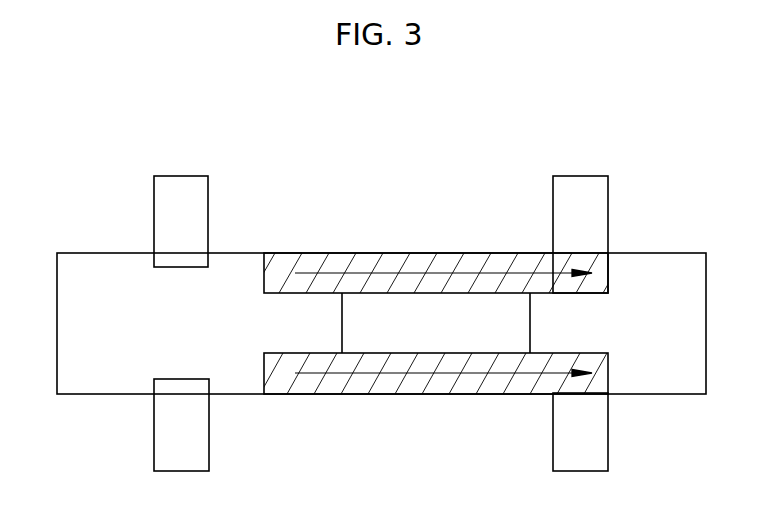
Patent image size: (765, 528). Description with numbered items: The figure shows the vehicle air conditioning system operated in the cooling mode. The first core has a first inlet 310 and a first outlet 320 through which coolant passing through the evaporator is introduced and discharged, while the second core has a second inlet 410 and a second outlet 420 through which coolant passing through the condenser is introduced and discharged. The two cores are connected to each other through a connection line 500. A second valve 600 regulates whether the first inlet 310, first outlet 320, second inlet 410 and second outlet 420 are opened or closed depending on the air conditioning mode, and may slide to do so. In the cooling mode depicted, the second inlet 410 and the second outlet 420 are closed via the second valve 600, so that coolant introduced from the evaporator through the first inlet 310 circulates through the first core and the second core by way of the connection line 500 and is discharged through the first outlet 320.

The first inlet 310 is at (162, 207).
The first outlet 320 is at (163, 438).
The second inlet 410 is at (602, 206).
The second outlet 420 is at (597, 443).
The connection line 500 is at (432, 327).
The second valve 600 is at (411, 267).